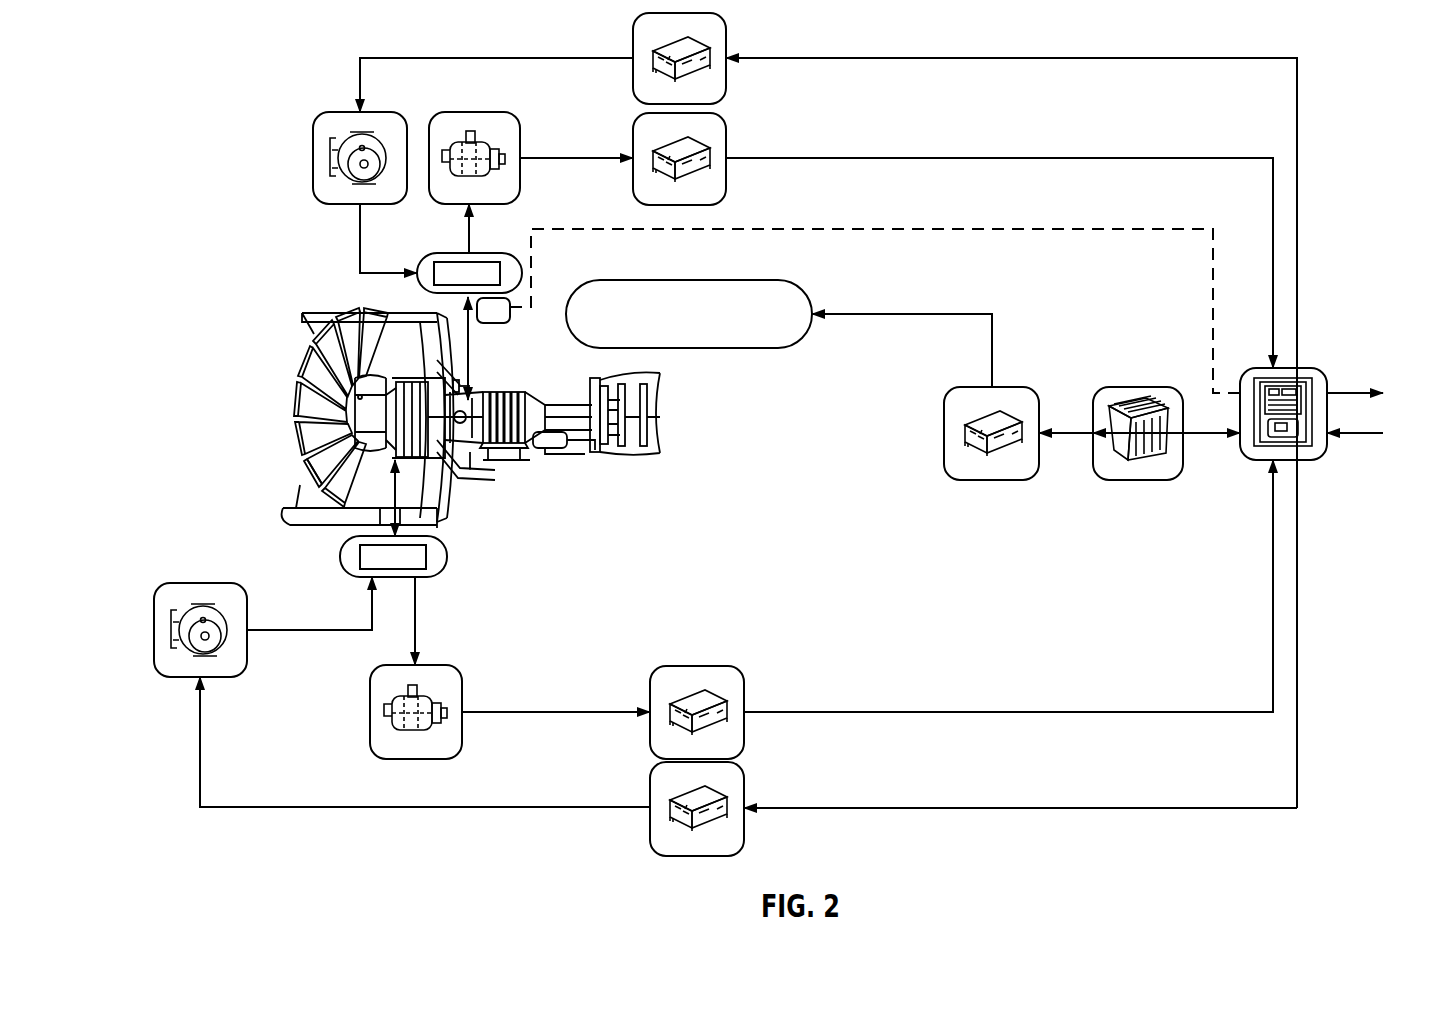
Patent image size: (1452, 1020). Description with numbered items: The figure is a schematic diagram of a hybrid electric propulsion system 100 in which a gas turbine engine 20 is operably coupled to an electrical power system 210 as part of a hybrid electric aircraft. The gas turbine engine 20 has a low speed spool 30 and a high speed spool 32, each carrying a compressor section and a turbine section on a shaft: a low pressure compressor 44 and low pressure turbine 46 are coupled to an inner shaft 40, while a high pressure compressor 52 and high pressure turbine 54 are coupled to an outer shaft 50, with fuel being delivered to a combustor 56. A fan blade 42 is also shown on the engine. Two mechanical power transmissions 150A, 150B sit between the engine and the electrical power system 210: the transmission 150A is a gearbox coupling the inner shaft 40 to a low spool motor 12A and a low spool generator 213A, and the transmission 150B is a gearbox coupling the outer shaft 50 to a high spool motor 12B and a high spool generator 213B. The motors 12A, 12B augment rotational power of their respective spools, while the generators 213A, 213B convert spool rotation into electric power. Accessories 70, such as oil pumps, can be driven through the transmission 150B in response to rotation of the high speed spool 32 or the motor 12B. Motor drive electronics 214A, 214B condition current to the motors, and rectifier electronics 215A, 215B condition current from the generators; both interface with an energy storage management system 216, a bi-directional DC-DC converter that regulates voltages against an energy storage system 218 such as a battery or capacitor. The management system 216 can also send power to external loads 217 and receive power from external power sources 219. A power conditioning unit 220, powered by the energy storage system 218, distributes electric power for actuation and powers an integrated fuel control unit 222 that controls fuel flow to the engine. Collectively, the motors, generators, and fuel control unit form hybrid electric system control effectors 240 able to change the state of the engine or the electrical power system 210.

The hybrid electric propulsion system 100 is at (143, 78).
The low spool motor 12A is at (154, 630).
The high spool motor 12B is at (313, 160).
The gas turbine engine 20 is at (275, 328).
The low speed spool 30 is at (440, 398).
The high speed spool 32 is at (555, 423).
The inner shaft 40 is at (360, 410).
The fan blade 42 is at (325, 480).
The low pressure compressor 44 is at (457, 465).
The low pressure turbine 46 is at (595, 443).
The outer shaft 50 is at (467, 400).
The high pressure compressor 52 is at (507, 443).
The high pressure turbine 54 is at (632, 453).
The combustor 56 is at (550, 443).
The accessories 70 is at (510, 320).
The mechanical power transmission 150A is at (447, 557).
The mechanical power transmission 150B is at (430, 255).
The electrical power system 210 is at (507, 226).
The low spool generator 213A is at (370, 712).
The high spool generator 213B is at (515, 118).
The motor drive electronics 214A is at (742, 765).
The motor drive electronics 214B is at (633, 50).
The rectifier electronics 215A is at (742, 668).
The rectifier electronics 215B is at (726, 138).
The energy storage management system 216 is at (1323, 458).
The external loads 217 is at (1360, 393).
The energy storage system 218 is at (1136, 482).
The external power sources 219 is at (1370, 433).
The power conditioning unit 220 is at (990, 482).
The integrated fuel control unit 222 is at (758, 348).
The hybrid electric system control effectors 240 is at (1035, 200).